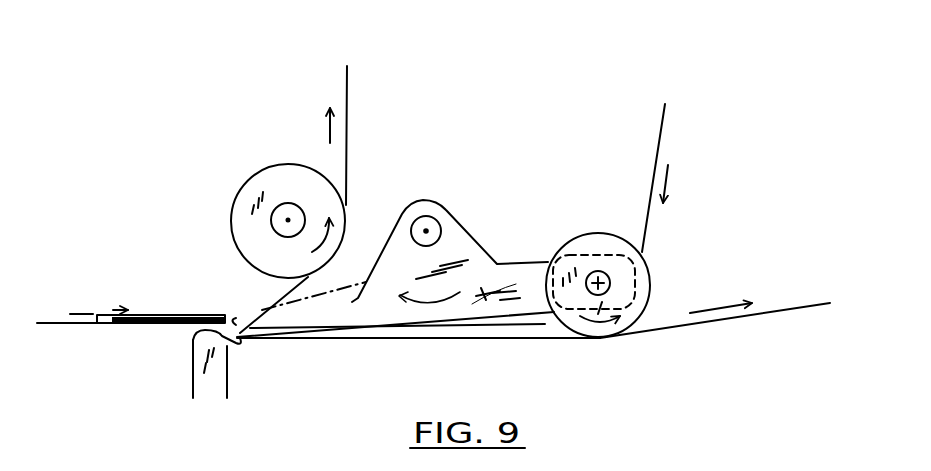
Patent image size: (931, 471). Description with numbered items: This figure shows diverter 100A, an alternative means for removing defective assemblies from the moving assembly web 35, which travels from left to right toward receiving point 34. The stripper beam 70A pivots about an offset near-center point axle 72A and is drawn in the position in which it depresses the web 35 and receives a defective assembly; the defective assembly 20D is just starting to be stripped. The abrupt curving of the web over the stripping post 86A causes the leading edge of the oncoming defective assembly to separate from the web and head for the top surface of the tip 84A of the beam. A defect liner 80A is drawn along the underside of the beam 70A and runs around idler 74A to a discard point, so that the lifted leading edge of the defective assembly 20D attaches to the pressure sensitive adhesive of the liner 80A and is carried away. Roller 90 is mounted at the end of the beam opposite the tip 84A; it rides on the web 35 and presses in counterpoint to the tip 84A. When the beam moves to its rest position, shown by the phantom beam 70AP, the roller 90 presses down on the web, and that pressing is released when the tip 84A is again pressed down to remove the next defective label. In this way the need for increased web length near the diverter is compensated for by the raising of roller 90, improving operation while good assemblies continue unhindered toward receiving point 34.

The diverter 100A is at (535, 102).
The defect liner 80A is at (348, 149).
The idler 74A is at (268, 168).
The offset near-center point axle 72A is at (427, 216).
The stripper beam 70A is at (470, 246).
The phantom beam 70AP is at (246, 318).
The roller 90 is at (650, 284).
The receiving point 34 is at (855, 286).
The defective assembly 20D is at (160, 317).
The assembly web 35 is at (87, 324).
The stripping post 86A is at (190, 343).
The tip 84A is at (240, 338).